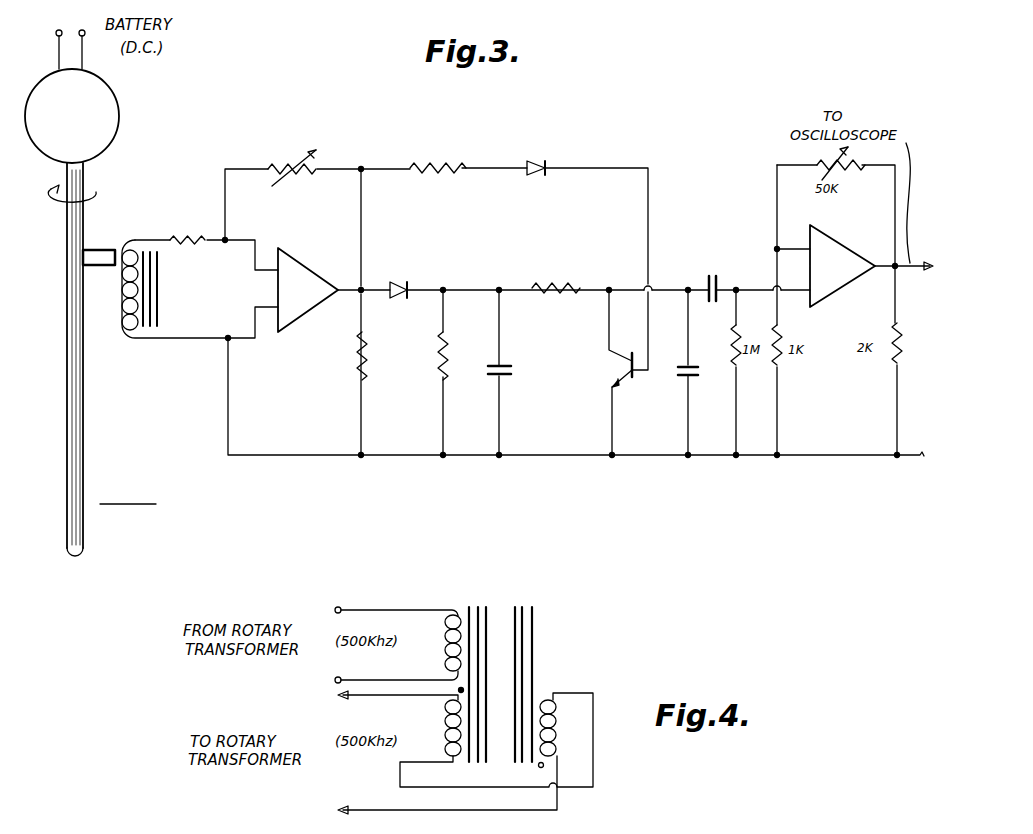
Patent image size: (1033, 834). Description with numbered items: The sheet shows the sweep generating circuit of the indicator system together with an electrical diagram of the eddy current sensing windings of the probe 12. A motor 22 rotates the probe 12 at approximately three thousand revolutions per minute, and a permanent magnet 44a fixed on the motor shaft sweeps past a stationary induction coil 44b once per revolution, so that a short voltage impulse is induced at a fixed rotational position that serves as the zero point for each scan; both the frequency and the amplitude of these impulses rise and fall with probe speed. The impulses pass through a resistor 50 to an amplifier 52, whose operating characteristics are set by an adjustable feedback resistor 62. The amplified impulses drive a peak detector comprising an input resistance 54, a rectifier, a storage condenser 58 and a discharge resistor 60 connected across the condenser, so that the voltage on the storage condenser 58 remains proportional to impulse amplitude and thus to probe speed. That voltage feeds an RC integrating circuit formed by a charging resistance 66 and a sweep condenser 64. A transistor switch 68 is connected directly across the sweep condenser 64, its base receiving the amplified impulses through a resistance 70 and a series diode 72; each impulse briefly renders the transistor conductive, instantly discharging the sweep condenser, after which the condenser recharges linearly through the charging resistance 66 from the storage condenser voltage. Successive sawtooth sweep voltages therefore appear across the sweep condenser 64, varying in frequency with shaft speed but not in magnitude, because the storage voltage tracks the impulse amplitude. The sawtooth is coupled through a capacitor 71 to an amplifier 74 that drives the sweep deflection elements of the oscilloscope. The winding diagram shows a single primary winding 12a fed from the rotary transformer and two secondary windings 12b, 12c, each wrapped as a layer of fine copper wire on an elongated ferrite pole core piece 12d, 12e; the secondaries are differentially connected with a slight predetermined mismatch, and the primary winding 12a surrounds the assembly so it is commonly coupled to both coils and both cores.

In FIG. 3, the probe 12 is at (84, 527).
In FIG. 3, the motor 22 is at (118, 92).
In FIG. 3, the permanent magnet 44a is at (100, 250).
In FIG. 3, the induction coil 44b is at (138, 238).
In FIG. 3, the resistor 50 is at (208, 245).
In FIG. 3, the amplifier 52 is at (317, 275).
In FIG. 3, the input resistance 54 is at (371, 354).
In FIG. 3, the storage condenser 58 is at (492, 378).
In FIG. 3, the discharge resistor 60 is at (449, 353).
In FIG. 3, the adjustable feedback resistor 62 is at (263, 162).
In FIG. 3, the sweep condenser 64 is at (698, 377).
In FIG. 3, the charging resistance 66 is at (553, 286).
In FIG. 3, the transistor switch 68 is at (635, 378).
In FIG. 3, the resistance 70 is at (440, 165).
In FIG. 3, the capacitor 71 is at (713, 274).
In FIG. 3, the series diode 72 is at (543, 163).
In FIG. 3, the amplifier 74 is at (830, 244).
In FIG. 4, the primary winding 12a is at (458, 608).
In FIG. 4, the secondary winding 12b is at (444, 719).
In FIG. 4, the secondary winding 12c is at (549, 738).
In FIG. 4, the pole core piece 12d is at (486, 608).
In FIG. 4, the pole core piece 12e is at (535, 608).